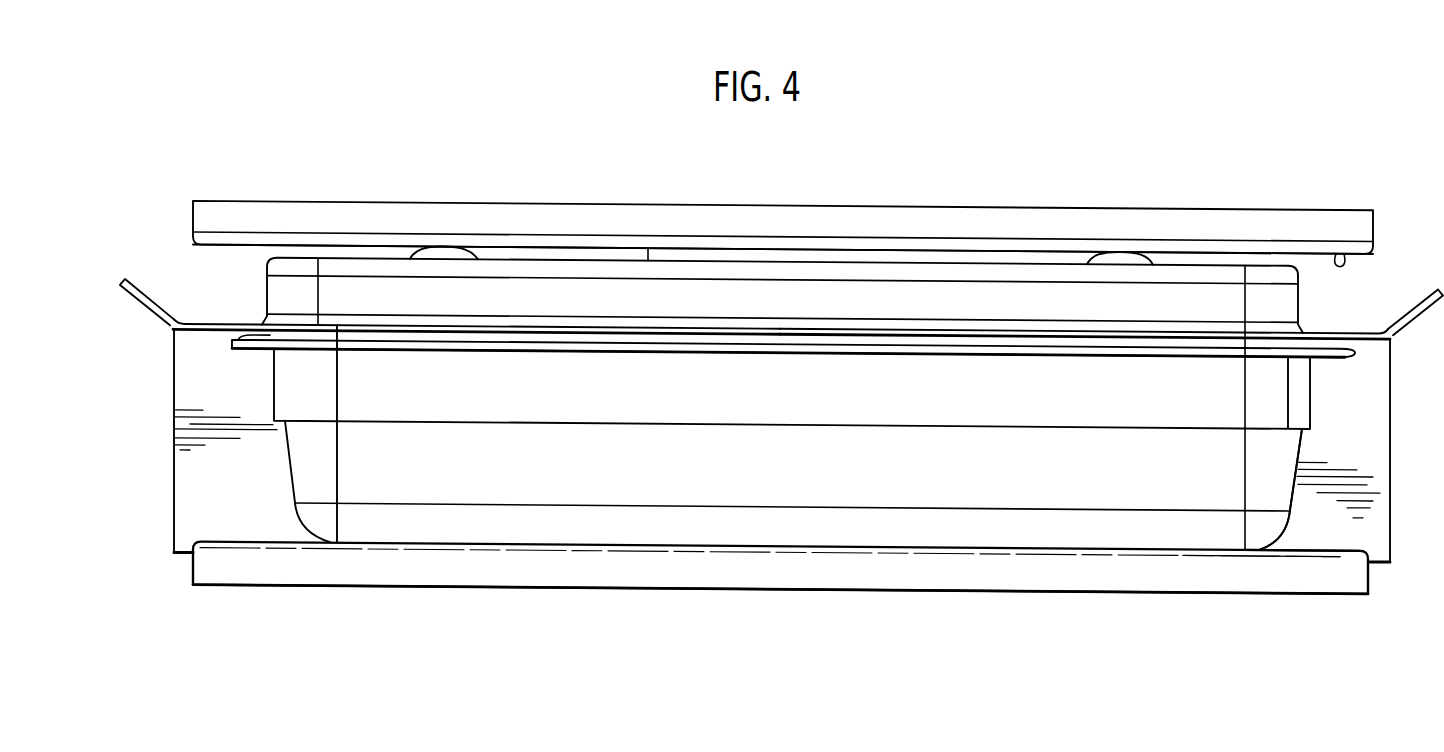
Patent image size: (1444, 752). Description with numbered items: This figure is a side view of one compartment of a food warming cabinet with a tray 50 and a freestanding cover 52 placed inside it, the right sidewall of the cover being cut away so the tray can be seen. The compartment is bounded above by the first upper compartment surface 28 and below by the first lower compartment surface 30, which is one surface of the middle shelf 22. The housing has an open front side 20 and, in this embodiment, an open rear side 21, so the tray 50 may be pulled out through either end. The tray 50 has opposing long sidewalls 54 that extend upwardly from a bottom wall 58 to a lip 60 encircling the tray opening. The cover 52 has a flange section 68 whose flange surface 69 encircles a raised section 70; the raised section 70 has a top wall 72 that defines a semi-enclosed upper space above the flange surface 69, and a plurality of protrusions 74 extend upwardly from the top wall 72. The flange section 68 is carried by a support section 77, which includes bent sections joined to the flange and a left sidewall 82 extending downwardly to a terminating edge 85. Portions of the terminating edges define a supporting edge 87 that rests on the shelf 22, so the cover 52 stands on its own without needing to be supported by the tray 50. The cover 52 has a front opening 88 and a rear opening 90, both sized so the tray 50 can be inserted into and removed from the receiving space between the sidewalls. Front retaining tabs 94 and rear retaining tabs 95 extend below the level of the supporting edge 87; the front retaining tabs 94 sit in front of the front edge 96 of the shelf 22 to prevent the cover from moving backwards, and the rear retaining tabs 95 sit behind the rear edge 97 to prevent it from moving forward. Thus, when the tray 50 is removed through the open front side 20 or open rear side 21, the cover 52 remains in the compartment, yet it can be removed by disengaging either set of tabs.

The open front side 20 is at (198, 254).
The open rear side 21 is at (1346, 279).
The middle shelf 22 is at (625, 585).
The first upper compartment surface 28 is at (1341, 250).
The first lower compartment surface 30 is at (240, 533).
The tray 50 is at (1299, 484).
The freestanding cover 52 is at (1393, 447).
The long sidewalls 54 is at (780, 482).
The bottom wall 58 is at (840, 540).
The lip 60 is at (290, 328).
The flange section 68 is at (855, 242).
The flange surface 69 is at (300, 334).
The raised section 70 is at (266, 288).
The top wall 72 is at (648, 252).
The protrusions 74 is at (480, 244).
The support section 77 is at (171, 454).
The left sidewall 82 is at (210, 472).
The terminating edge 85 is at (1330, 543).
The supporting edge 87 is at (1280, 543).
The front opening 88 is at (171, 366).
The rear opening 90 is at (1393, 366).
The front retaining tabs 94 is at (180, 556).
The rear retaining tabs 95 is at (1380, 555).
The front edge 96 is at (193, 577).
The rear edge 97 is at (1378, 564).